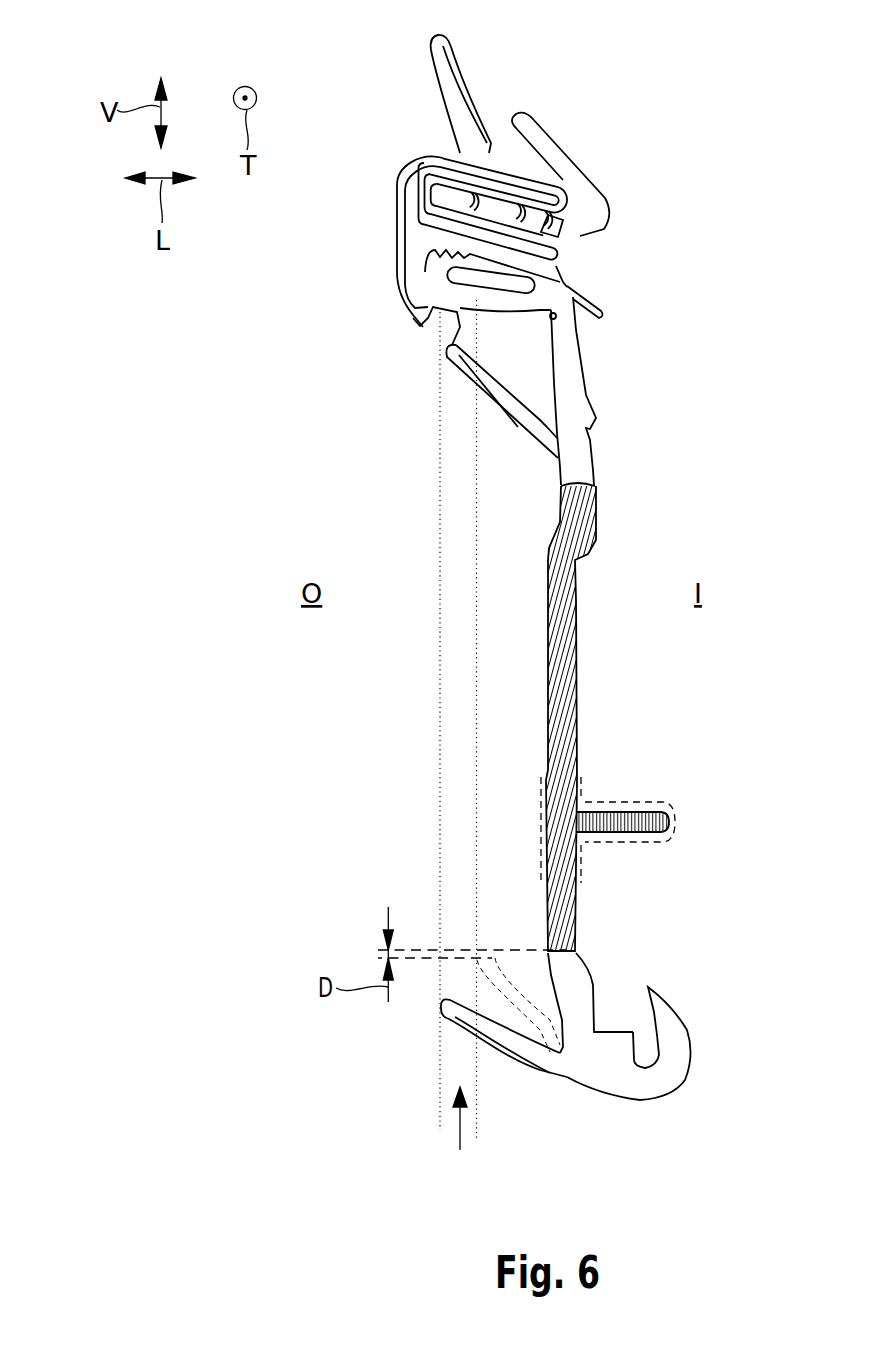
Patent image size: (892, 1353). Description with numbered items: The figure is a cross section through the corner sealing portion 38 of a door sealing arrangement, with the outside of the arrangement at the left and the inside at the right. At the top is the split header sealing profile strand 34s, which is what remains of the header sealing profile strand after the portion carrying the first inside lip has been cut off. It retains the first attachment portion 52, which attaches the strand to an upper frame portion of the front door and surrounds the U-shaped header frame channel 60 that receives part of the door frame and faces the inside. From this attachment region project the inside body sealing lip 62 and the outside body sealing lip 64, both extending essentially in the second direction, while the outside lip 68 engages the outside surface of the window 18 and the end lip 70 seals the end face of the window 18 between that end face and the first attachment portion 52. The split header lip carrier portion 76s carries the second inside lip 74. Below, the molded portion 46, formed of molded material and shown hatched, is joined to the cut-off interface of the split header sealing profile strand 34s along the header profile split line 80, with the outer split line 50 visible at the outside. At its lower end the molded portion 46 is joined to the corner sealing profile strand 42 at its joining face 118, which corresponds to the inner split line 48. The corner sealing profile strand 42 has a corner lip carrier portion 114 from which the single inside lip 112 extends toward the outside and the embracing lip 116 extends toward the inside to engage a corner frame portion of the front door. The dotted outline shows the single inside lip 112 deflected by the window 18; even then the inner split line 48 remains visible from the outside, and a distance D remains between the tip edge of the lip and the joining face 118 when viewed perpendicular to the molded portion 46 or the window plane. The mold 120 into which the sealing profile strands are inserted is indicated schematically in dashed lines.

The window 18 is at (457, 668).
The split header sealing profile strand 34s is at (611, 150).
The corner sealing portion 38 is at (722, 80).
The corner sealing profile strand 42 is at (645, 942).
The molded portion 46 is at (563, 670).
The inner split line 48 is at (550, 940).
The outer split line 50 is at (560, 482).
The first attachment portion 52 is at (513, 77).
The header frame channel 60 is at (542, 229).
The inside body sealing lip 62 is at (548, 147).
The outside body sealing lip 64 is at (447, 70).
The outside lip 68 is at (422, 318).
The end lip 70 is at (510, 293).
The second inside lip 74 is at (517, 410).
The split header lip carrier portion 76s is at (573, 412).
The header profile split line 80 is at (590, 483).
The single inside lip 112 is at (453, 1017).
The corner lip carrier portion 114 is at (573, 983).
The embracing lip 116 is at (670, 1053).
The joining face 118 is at (577, 932).
The mold 120 is at (640, 810).